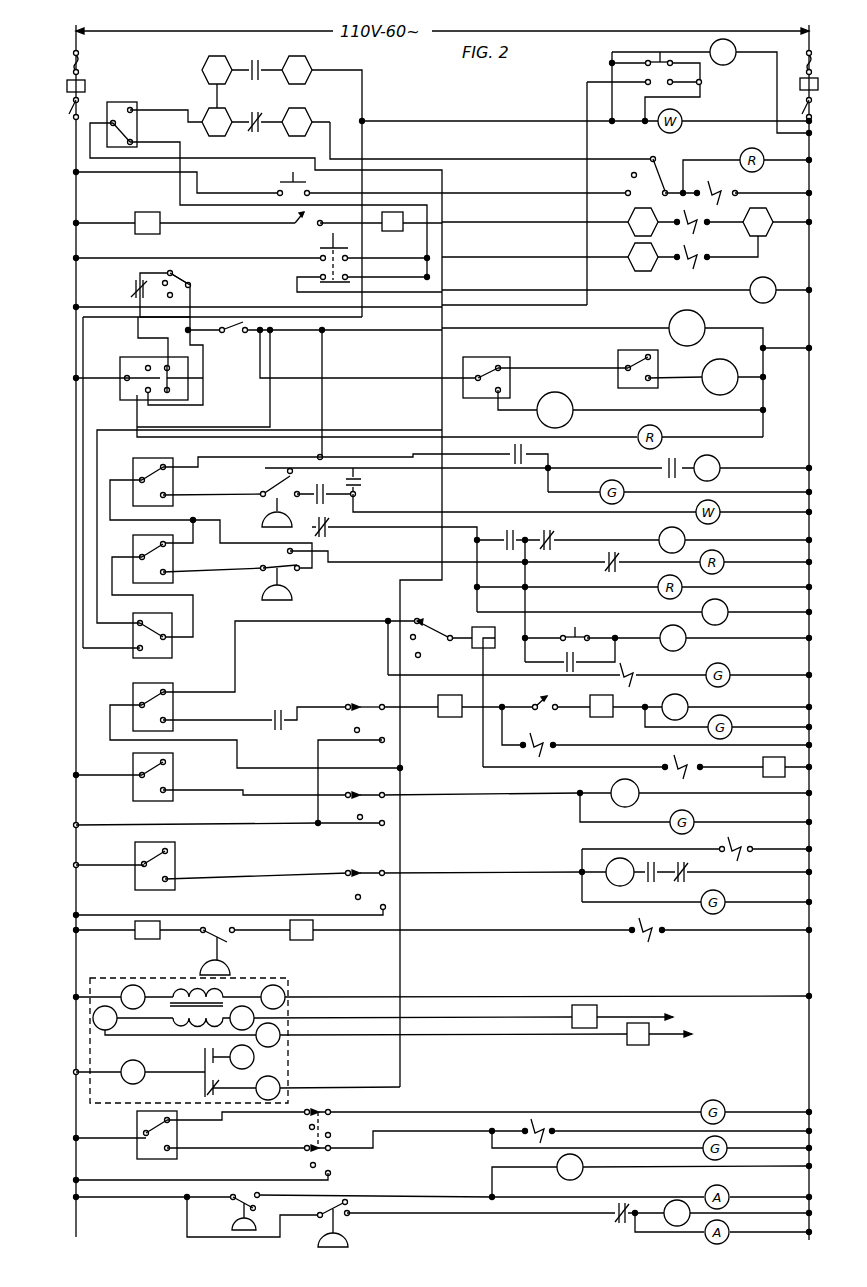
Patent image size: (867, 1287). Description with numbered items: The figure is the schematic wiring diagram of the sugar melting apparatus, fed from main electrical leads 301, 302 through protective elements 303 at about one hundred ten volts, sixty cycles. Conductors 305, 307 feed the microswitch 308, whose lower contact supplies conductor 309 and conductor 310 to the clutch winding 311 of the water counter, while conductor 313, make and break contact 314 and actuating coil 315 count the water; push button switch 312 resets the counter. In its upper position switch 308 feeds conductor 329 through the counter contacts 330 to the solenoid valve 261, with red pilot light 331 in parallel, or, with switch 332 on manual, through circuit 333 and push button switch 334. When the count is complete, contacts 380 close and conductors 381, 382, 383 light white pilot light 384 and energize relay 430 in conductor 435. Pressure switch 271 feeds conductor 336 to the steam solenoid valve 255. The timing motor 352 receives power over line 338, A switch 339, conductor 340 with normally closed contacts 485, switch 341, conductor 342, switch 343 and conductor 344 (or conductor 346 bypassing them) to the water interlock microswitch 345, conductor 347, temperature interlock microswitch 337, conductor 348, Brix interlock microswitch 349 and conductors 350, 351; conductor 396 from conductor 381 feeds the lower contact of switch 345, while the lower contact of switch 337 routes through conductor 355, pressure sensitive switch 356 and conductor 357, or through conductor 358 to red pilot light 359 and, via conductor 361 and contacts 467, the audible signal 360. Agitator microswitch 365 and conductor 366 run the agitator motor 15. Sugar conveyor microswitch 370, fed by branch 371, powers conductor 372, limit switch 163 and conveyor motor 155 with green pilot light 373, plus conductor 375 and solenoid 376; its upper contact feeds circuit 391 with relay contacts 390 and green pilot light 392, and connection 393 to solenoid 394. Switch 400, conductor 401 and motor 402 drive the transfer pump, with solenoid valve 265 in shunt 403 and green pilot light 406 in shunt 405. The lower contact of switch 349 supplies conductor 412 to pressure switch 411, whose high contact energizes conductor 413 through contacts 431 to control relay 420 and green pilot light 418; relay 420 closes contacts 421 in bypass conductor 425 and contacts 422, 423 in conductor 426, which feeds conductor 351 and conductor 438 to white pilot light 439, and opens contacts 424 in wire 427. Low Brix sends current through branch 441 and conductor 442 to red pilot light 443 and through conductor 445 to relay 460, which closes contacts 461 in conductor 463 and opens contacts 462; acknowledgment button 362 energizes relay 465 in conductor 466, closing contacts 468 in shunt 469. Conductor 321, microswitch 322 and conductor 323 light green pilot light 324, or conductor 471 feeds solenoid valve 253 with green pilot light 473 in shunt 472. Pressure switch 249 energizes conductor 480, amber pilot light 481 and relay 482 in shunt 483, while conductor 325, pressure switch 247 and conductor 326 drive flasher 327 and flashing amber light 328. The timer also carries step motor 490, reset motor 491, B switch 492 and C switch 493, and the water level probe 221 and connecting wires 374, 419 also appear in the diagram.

The main electrical lead 301 is at (76, 36).
The main electrical lead 302 is at (812, 40).
The fuse and switch 303 is at (70, 113).
The microswitch 308 is at (112, 102).
The conductor 329 is at (150, 110).
The water counter contacts 380 is at (252, 62).
The water counter contacts 330 is at (250, 133).
The conductor 381 is at (362, 78).
The conductor 382 is at (387, 121).
The conductor 309 is at (180, 189).
The push button switch 334 is at (292, 177).
The power circuit 333 is at (444, 194).
The conductor 313 is at (160, 233).
The make and break contact 314 is at (296, 224).
The conductor 396 is at (364, 242).
The circuit conductor 307 is at (443, 212).
The push button switch 312 is at (333, 243).
The conductor 310 is at (449, 258).
The conductor 340 is at (135, 294).
The normally closed relay contacts 485 is at (135, 285).
The switch 341 is at (185, 284).
The conductor 342 is at (192, 294).
The line 338 is at (100, 378).
The A switch 339 is at (188, 380).
The switch 343 is at (236, 335).
The conductor 346 is at (203, 403).
The conductor 344 is at (272, 390).
The conductor 351 is at (324, 416).
The Brix interlock microswitch 349 is at (140, 460).
The conductor 350 is at (210, 458).
The conductor 348 is at (110, 497).
The conductor 412 is at (185, 498).
The pressure sensitive switch 411 is at (263, 506).
The conductor 426 is at (352, 457).
The normally open relay contacts 422 is at (365, 482).
The normally open relay contacts 423 is at (327, 497).
The conductor 438 is at (457, 514).
The normally closed relay contacts 424 is at (326, 535).
The circuit wire 427 is at (396, 530).
The temperature interlock microswitch 337 is at (133, 547).
The conductor 357 is at (240, 544).
The conductor 355 is at (190, 572).
The pressure sensitive switch 356 is at (290, 576).
The conductor 358 is at (347, 563).
The conductor 347 is at (193, 605).
The water interlock microswitch 345 is at (165, 645).
The sugar conveyor microswitch 370 is at (133, 690).
The circuit conductor 391 is at (235, 642).
The branch conductor 371 is at (238, 755).
The conductor 372 is at (413, 705).
The limit switch 163 is at (543, 699).
The sugar conveyor motor 155 is at (670, 695).
The conductor 374 is at (645, 727).
The green pilot light 373 is at (733, 720).
The solenoid 376 is at (655, 732).
The parallel conductor 375 is at (580, 745).
The circuit connection 393 is at (483, 742).
The solenoid 394 is at (703, 765).
The agitator microswitch 365 is at (133, 765).
The conductor 366 is at (213, 792).
The agitator motor 15 is at (615, 784).
The sample transfer pump microswitch 400 is at (135, 846).
The conductor 401 is at (205, 874).
The motor 402 is at (607, 878).
The shunt circuit 403 is at (597, 849).
The solenoid valve 265 is at (748, 845).
The shunt circuit 405 is at (623, 905).
The green pilot light 406 is at (725, 897).
The circuit conductor 336 is at (97, 940).
The pressure switch 271 is at (210, 940).
The solenoid valve 255 is at (660, 936).
The water level probe 221 is at (290, 1069).
The circuit conductor 305 is at (190, 1073).
The conductor 321 is at (123, 1136).
The transfer microswitch 322 is at (137, 1150).
The conductor 323 is at (412, 1111).
The green pilot light 324 is at (700, 1105).
The conductor 471 is at (213, 1150).
The solenoid valve 253 is at (547, 1121).
The shunt circuit 472 is at (700, 1148).
The green pilot light 473 is at (727, 1150).
The conductor 325 is at (143, 1198).
The pressure switch 249 is at (240, 1208).
The conductor 480 is at (425, 1193).
The control relay 482 is at (557, 1173).
The shunt circuit 483 is at (612, 1170).
The amber pilot light 481 is at (728, 1195).
The pressure switch 247 is at (337, 1223).
The conductor 326 is at (540, 1217).
The flasher 327 is at (672, 1202).
The flashing amber pilot light 328 is at (732, 1233).
The relay 430 is at (718, 40).
The conductor 435 is at (777, 66).
The conductor 383 is at (700, 72).
The white pilot light 384 is at (683, 114).
The red pilot light 331 is at (742, 149).
The switch 332 is at (632, 176).
The solenoid valve 261 is at (722, 188).
The actuating coil 315 is at (625, 227).
The clutch winding 311 is at (600, 261).
The timing motor 352 is at (700, 318).
The C switch 493 is at (487, 355).
The B switch 492 is at (618, 377).
The reset motor 491 is at (706, 392).
The step motor 490 is at (566, 397).
The conductor 425 is at (466, 433).
The normally open relay contacts 421 is at (536, 465).
The conductor 413 is at (490, 473).
The normally open relay contacts 431 is at (668, 467).
The control relay 420 is at (718, 461).
The conductor 419 is at (595, 495).
The green pilot light 418 is at (624, 497).
The white pilot light 439 is at (720, 511).
The normally open relay contacts 461 is at (512, 530).
The normally closed contacts 467 is at (551, 538).
The conductor 361 is at (654, 530).
The audible signal 360 is at (686, 536).
The conductor 463 is at (490, 545).
The branch conductor 441 is at (477, 588).
The normally closed relay contacts 462 is at (606, 556).
The red pilot light 359 is at (724, 558).
The conductor 442 is at (538, 587).
The red pilot light 443 is at (659, 586).
The conductor 445 is at (535, 612).
The control relay 460 is at (726, 608).
The circuit conductor 466 is at (785, 638).
The acknowledgement button 362 is at (576, 625).
The shunt circuit 469 is at (591, 648).
The relay 465 is at (687, 643).
The normally open relay contacts 468 is at (563, 660).
The normally open relay contacts 390 is at (629, 676).
The green pilot light 392 is at (730, 672).